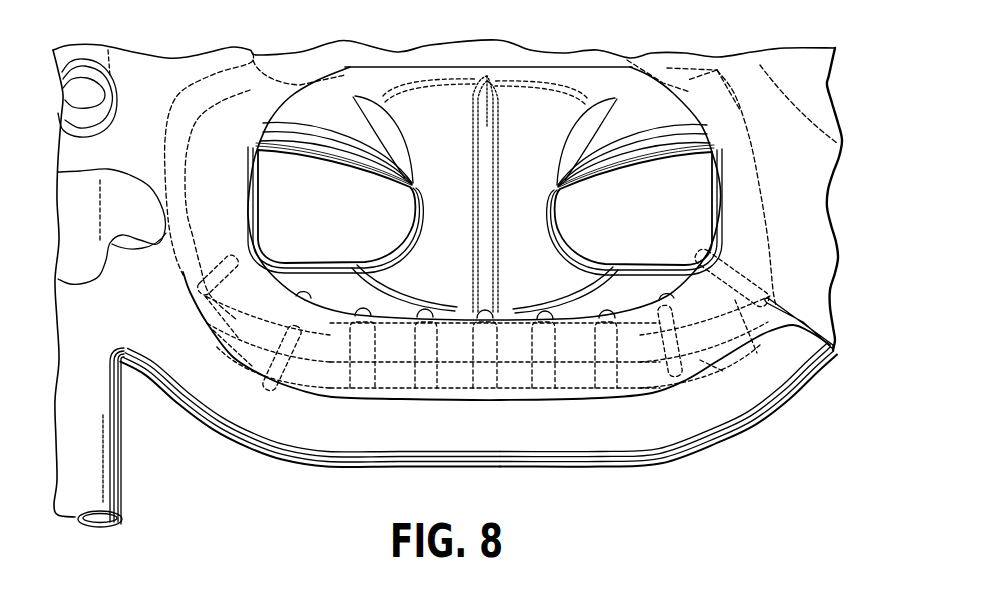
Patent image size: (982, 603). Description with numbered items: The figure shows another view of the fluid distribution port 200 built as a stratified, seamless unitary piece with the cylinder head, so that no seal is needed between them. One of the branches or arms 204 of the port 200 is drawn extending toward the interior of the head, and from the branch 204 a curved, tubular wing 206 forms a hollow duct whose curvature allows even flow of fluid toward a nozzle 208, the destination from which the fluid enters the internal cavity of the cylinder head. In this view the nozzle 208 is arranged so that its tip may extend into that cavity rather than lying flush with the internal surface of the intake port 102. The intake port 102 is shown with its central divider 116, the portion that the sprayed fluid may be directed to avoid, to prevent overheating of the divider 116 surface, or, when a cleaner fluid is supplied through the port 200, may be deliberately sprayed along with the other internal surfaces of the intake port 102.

The intake port 102 is at (650, 112).
The divider 116 is at (487, 128).
The fluid delivery port 200 is at (677, 458).
The branch 204 is at (122, 417).
The wing 206 is at (293, 467).
The nozzle 208 is at (723, 350).